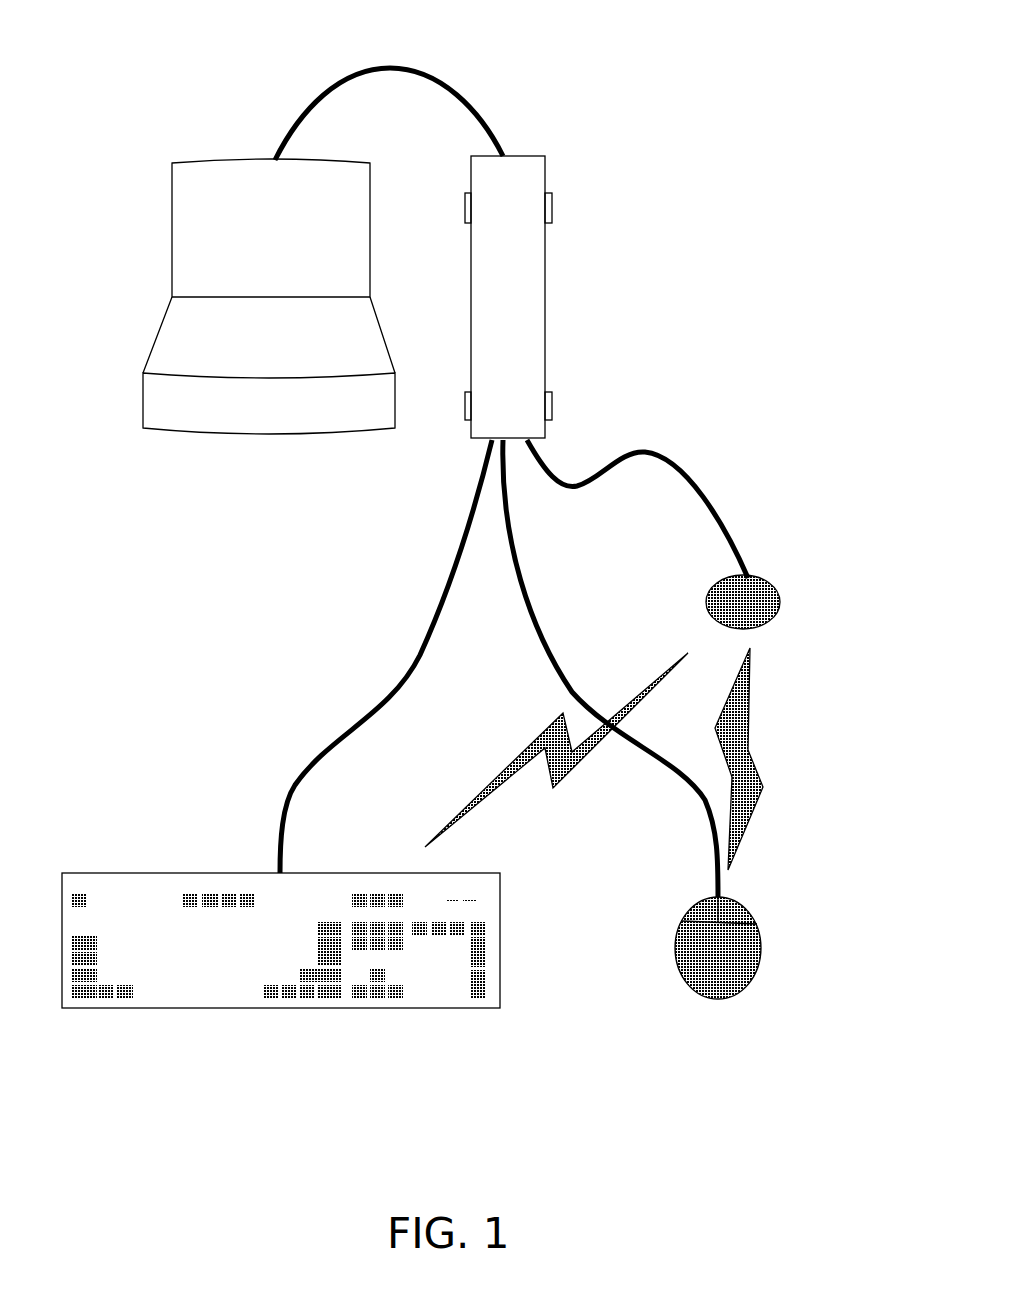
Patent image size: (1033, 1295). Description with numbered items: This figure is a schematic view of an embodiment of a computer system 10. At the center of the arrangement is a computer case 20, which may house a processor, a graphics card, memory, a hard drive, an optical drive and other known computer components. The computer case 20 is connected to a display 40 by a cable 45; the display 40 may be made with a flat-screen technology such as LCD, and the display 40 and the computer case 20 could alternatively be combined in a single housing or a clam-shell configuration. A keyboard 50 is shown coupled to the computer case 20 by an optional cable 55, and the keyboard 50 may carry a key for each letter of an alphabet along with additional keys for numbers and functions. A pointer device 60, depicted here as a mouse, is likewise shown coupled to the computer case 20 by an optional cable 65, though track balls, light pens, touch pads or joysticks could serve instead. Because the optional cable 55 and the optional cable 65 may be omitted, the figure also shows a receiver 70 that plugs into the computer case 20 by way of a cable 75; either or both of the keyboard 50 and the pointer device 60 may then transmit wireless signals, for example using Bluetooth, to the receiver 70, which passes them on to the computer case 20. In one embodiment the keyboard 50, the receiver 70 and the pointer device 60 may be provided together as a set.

The computer system 10 is at (625, 55).
The computer case 20 is at (545, 252).
The display 40 is at (143, 404).
The cable 45 is at (323, 88).
The keyboard 50 is at (258, 1008).
The optional cable 55 is at (332, 748).
The pointer device 60 is at (717, 1000).
The optional cable 65 is at (720, 875).
The receiver 70 is at (763, 577).
The cable 75 is at (658, 450).